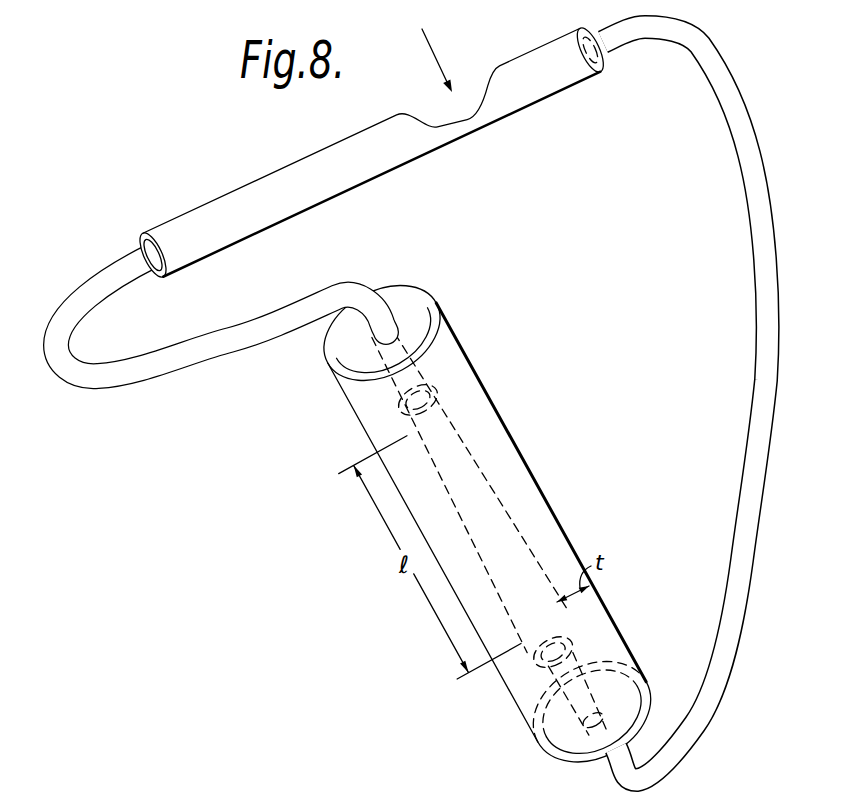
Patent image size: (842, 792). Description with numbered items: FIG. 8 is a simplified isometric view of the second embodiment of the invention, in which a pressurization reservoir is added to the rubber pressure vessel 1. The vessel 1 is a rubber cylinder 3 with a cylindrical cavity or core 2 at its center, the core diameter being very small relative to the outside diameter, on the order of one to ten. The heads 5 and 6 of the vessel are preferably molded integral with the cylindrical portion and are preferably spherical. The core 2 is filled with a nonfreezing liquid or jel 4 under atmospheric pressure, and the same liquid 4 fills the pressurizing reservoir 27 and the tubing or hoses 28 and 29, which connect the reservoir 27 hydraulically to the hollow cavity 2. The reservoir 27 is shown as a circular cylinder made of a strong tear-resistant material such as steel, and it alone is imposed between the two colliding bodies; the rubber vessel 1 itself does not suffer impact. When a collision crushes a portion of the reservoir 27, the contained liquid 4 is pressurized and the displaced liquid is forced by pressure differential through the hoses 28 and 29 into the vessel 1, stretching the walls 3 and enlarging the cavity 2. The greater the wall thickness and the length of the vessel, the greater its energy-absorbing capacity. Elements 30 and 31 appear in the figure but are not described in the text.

The rubber pressure vessel 1 is at (409, 510).
The cylindrical cavity or core 2 is at (490, 487).
The rubber cylinder wall 3 is at (547, 520).
The nonfreezing liquid or jel 4 is at (435, 403).
The head of the vessel 5 is at (348, 389).
The head of the vessel 6 is at (560, 753).
The pressurizing reservoir 27 is at (249, 192).
The tubing or hose 28 is at (262, 308).
The tubing or hose 29 is at (748, 206).
The upper opening 30 is at (440, 388).
The lower opening 31 is at (572, 634).